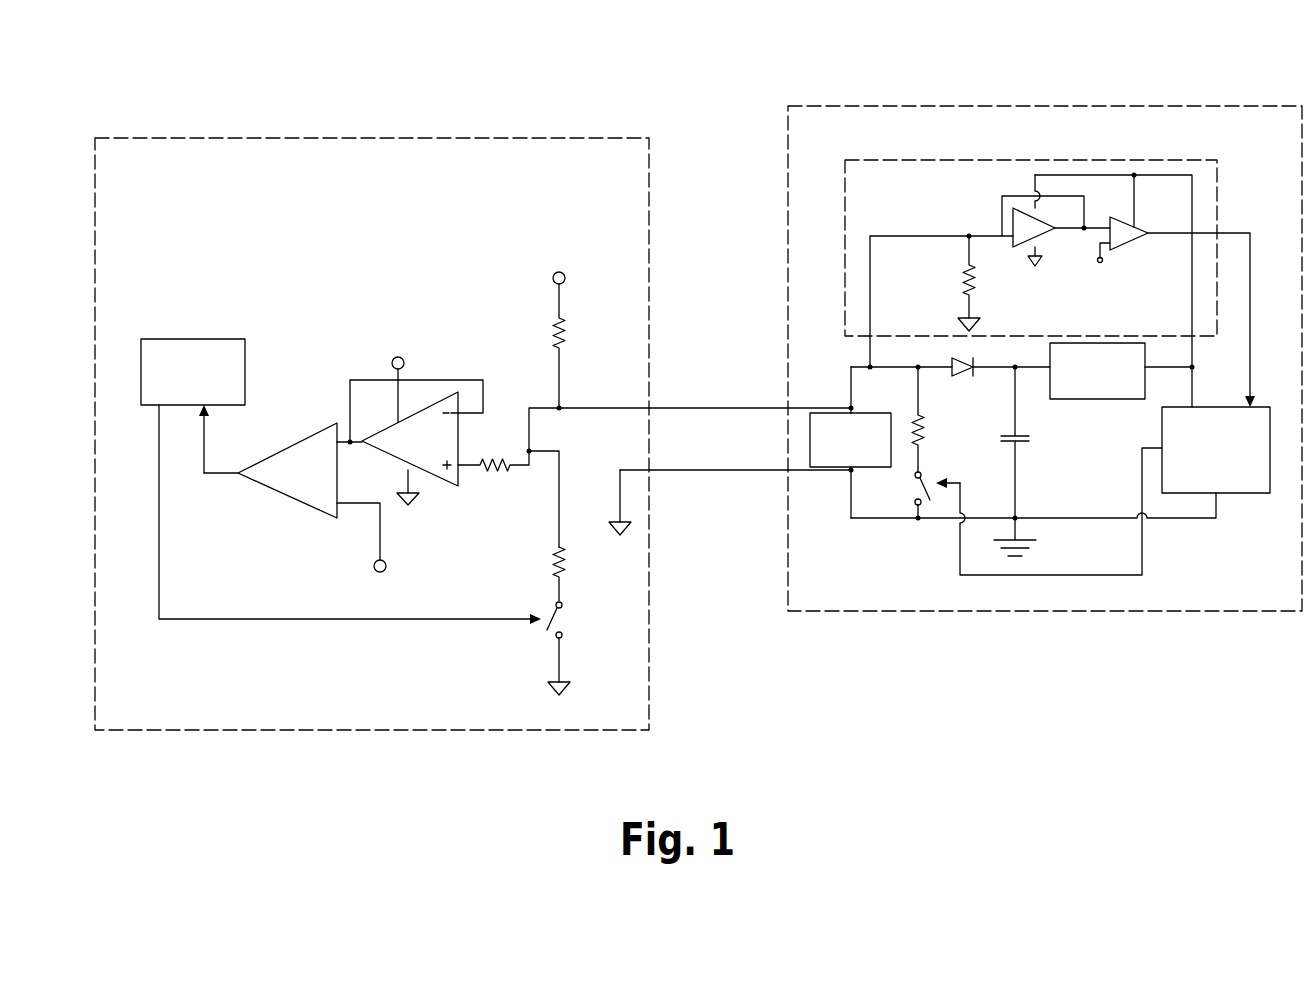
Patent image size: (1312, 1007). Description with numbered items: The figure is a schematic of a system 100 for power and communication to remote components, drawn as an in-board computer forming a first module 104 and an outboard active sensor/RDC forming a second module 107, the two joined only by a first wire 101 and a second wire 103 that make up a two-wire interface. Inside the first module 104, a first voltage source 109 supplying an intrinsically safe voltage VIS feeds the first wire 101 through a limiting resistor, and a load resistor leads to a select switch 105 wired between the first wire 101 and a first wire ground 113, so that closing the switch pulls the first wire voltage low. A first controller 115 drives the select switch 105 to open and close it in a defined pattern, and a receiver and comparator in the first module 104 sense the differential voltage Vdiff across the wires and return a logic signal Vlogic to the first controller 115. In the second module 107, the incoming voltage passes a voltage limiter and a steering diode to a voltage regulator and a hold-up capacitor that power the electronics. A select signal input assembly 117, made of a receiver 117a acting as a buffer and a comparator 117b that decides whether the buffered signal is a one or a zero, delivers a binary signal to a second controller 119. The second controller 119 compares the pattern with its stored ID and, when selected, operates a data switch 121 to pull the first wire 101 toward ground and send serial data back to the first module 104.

The system 100 is at (95, 120).
The first module 104 is at (178, 203).
The first controller 115 is at (167, 337).
The first voltage source 109 is at (553, 278).
The select switch 105 is at (552, 612).
The first wire ground 113 is at (549, 690).
The first wire 101 is at (751, 407).
The second wire 103 is at (741, 475).
The second module 107 is at (877, 582).
The select signal input assembly 117 is at (845, 210).
The receiver 117a is at (1040, 248).
The comparator 117b is at (1162, 210).
The second controller 119 is at (1259, 404).
The data switch 121 is at (926, 480).